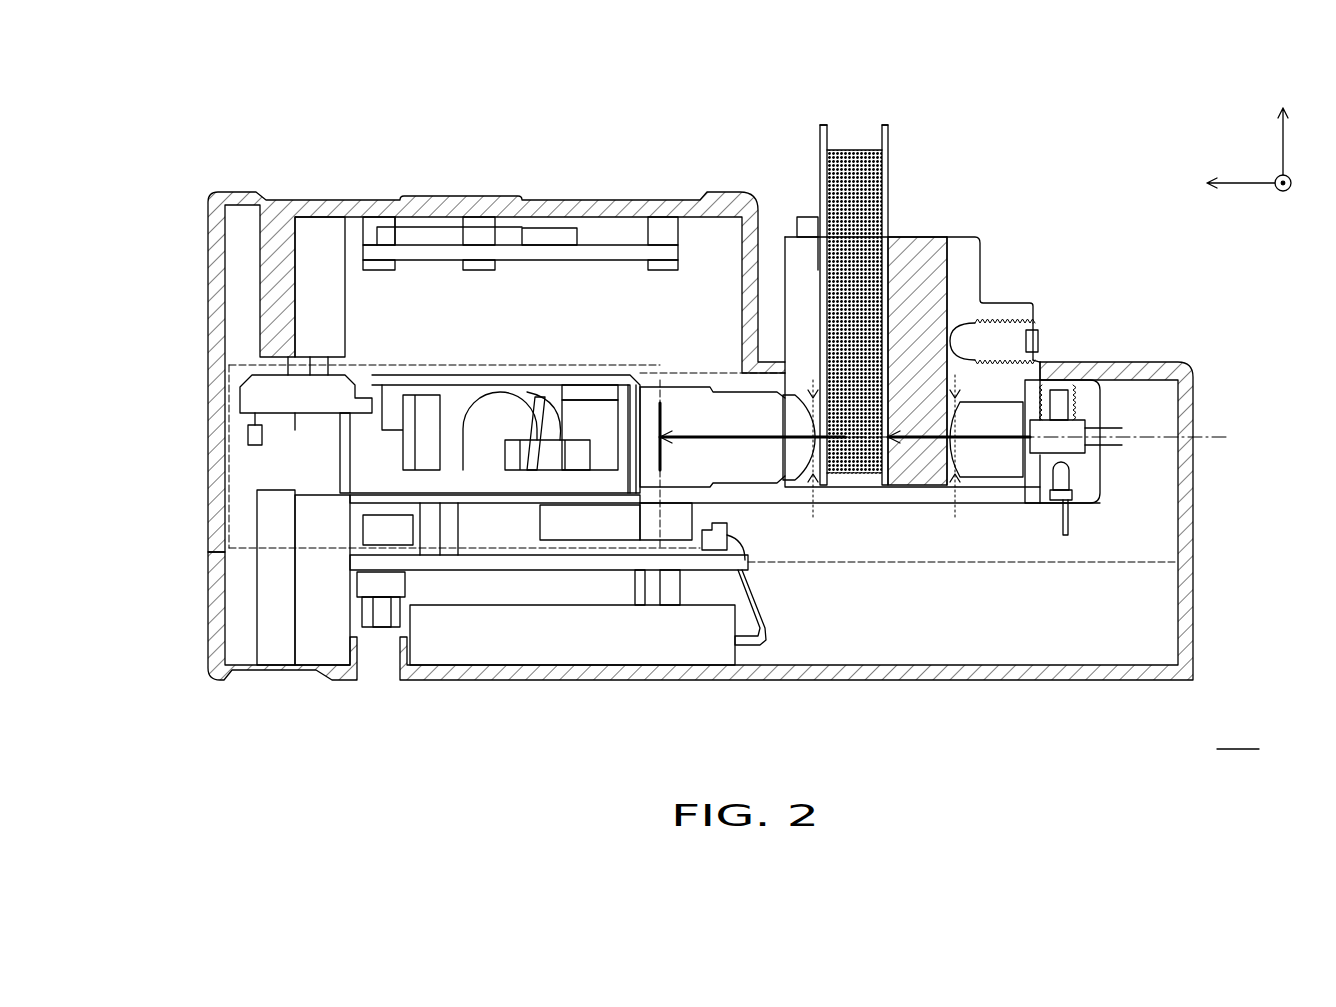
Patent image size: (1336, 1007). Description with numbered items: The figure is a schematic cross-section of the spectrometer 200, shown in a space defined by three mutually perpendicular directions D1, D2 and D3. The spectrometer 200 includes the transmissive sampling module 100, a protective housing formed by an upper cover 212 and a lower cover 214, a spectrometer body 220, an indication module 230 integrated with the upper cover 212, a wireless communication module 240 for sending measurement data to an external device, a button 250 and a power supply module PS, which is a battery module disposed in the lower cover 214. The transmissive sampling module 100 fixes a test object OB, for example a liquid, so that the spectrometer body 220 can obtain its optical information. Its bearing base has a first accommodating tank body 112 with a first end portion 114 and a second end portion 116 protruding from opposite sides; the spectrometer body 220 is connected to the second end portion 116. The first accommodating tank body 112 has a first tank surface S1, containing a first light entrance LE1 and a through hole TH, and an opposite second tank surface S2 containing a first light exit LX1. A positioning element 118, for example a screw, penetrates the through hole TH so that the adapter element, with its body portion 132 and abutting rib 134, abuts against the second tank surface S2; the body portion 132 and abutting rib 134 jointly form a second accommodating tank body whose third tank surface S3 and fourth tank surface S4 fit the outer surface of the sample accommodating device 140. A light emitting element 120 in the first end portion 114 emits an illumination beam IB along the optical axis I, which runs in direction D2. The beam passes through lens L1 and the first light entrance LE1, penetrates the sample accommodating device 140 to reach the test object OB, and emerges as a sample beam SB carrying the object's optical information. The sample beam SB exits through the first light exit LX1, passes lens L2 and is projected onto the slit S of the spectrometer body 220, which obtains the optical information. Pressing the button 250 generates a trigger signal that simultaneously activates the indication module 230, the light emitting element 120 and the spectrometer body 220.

The transmissive sampling module 100 is at (968, 225).
The first accommodating tank body 112 is at (790, 300).
The first end portion 114 is at (1148, 405).
The second end portion 116 is at (727, 387).
The positioning element 118 is at (1045, 323).
The light emitting element 120 is at (1043, 495).
The body portion 132 is at (915, 265).
The abutting rib 134 is at (818, 278).
The sample accommodating device 140 is at (886, 125).
The spectrometer 200 is at (1238, 732).
The upper cover 212 is at (212, 440).
The lower cover 214 is at (212, 610).
The spectrometer body 220 is at (229, 498).
The indication module 230 is at (372, 228).
The wireless communication module 240 is at (618, 250).
The button 250 is at (470, 200).
The test object OB is at (875, 185).
The slit S is at (663, 458).
The power supply module PS is at (548, 640).
The first tank surface S1 is at (950, 258).
The second tank surface S2 is at (818, 268).
The third tank surface S3 is at (886, 258).
The fourth tank surface S4 is at (828, 226).
The sample beam SB is at (731, 436).
The illumination beam IB is at (926, 434).
The optical axis I is at (1220, 437).
The lens L1 is at (1000, 470).
The lens L2 is at (795, 470).
The first light entrance LE1 is at (957, 513).
The first light exit LX1 is at (815, 518).
The through hole TH is at (1050, 340).
The direction D1 is at (1298, 202).
The direction D2 is at (1222, 183).
The direction D3 is at (1283, 123).